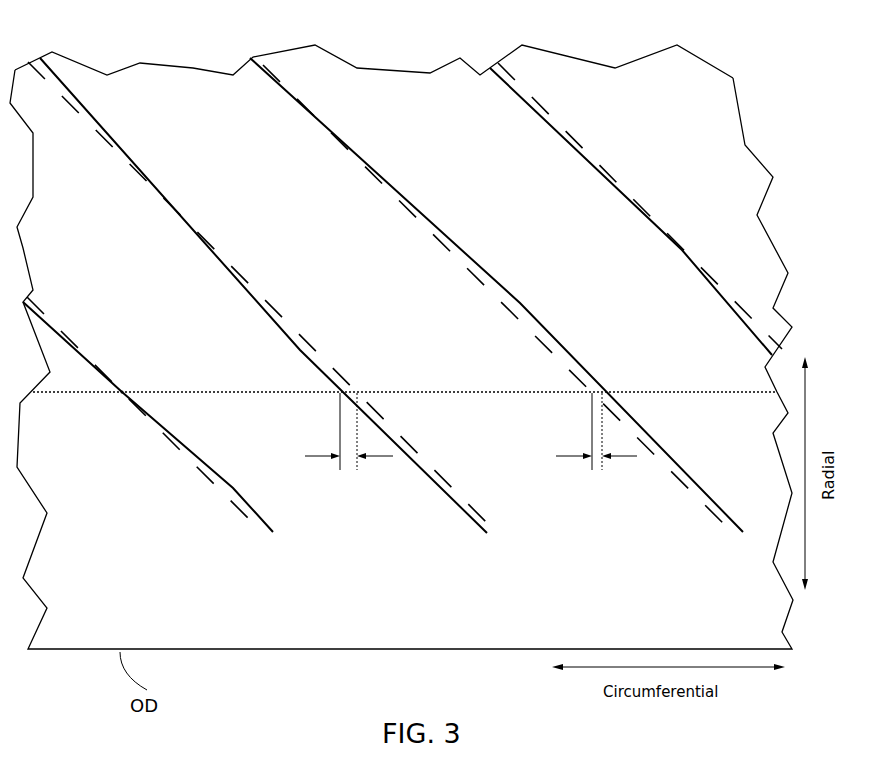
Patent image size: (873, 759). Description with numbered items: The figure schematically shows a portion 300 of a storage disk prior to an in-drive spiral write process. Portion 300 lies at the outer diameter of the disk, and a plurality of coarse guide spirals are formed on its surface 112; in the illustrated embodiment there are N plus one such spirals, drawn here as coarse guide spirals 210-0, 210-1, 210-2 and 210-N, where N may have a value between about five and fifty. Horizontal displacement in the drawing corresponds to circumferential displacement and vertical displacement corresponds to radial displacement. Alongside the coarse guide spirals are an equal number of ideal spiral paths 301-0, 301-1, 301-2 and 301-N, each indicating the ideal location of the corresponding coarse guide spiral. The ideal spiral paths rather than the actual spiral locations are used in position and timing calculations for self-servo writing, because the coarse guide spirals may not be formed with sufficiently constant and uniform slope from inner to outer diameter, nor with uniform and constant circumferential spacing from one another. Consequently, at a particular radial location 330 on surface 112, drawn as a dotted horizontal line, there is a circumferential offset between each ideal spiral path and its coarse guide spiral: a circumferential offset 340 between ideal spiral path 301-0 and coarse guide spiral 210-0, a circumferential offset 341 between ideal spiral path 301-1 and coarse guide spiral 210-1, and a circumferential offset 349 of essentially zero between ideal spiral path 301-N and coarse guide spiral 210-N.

The portion of storage disk 300 is at (193, 67).
The surface 112 is at (139, 610).
The coarse guide spiral 210-0 is at (108, 123).
The coarse guide spiral 210-1 is at (311, 127).
The coarse guide spiral 210-2 is at (597, 167).
The coarse guide spiral 210-N is at (185, 441).
The ideal spiral path 301-0 is at (137, 173).
The ideal spiral path 301-1 is at (338, 133).
The ideal spiral path 301-2 is at (570, 132).
The ideal spiral path 301-N is at (233, 507).
The radial location 330 is at (237, 390).
The circumferential offset 340 is at (310, 457).
The circumferential offset 341 is at (563, 458).
The circumferential offset 349 is at (121, 393).